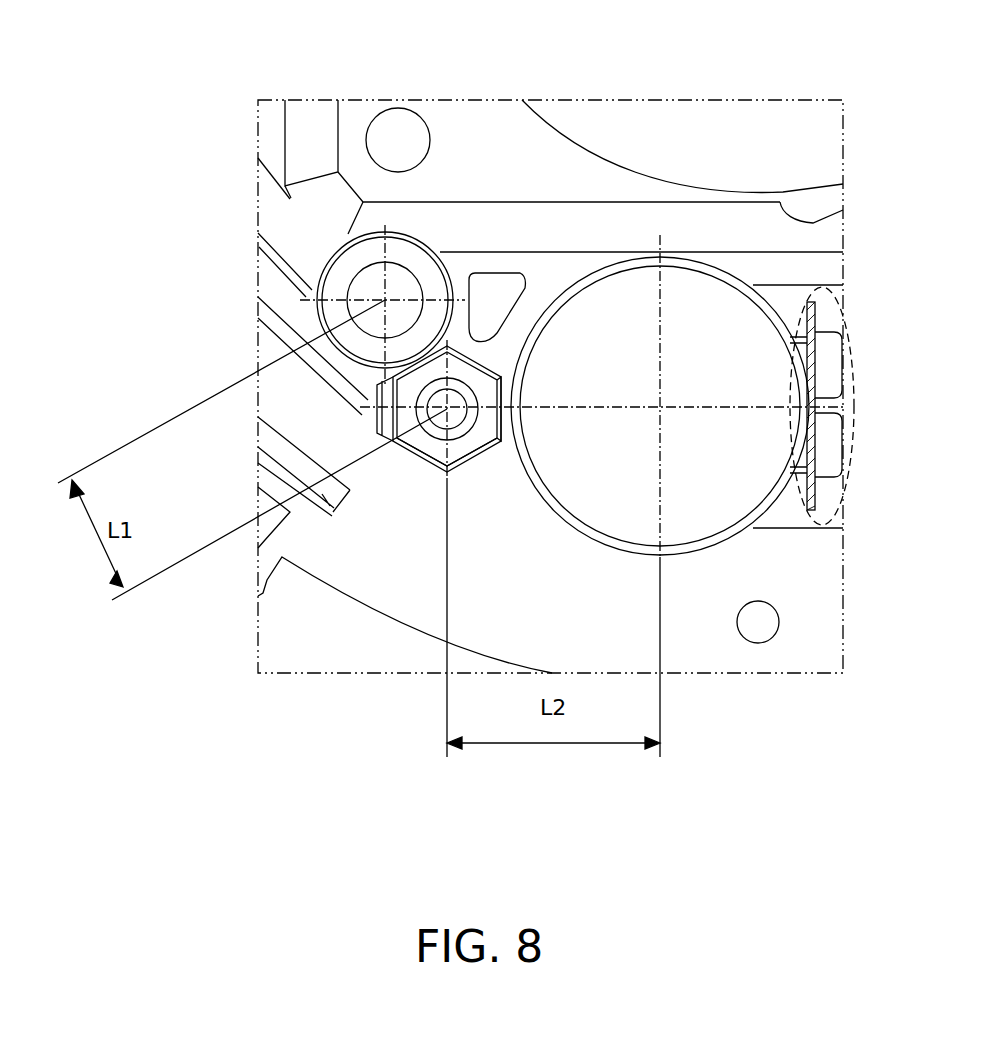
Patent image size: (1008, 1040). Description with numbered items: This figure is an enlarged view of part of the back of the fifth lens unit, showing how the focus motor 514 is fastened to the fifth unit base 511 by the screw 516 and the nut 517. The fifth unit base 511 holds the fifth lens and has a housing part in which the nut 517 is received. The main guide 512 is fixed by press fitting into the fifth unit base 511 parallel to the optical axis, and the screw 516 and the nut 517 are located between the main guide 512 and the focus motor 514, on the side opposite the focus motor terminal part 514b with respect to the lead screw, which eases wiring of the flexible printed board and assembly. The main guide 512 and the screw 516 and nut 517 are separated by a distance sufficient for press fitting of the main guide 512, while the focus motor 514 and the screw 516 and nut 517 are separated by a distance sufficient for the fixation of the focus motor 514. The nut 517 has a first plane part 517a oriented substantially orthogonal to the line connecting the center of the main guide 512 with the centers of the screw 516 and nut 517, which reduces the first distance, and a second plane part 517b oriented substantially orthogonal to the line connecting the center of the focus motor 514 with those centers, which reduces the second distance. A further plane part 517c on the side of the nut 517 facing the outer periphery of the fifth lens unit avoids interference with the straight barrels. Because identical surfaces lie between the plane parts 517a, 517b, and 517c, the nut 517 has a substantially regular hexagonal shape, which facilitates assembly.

The fifth unit base 511 is at (490, 155).
The main guide 512 is at (368, 280).
The focus motor 514 is at (682, 512).
The focus motor terminal part 514b is at (823, 290).
The screw 516 is at (452, 396).
The nut 517 is at (413, 594).
The plane part 517a is at (410, 377).
The plane part 517b is at (490, 423).
The plane part 517c is at (417, 447).